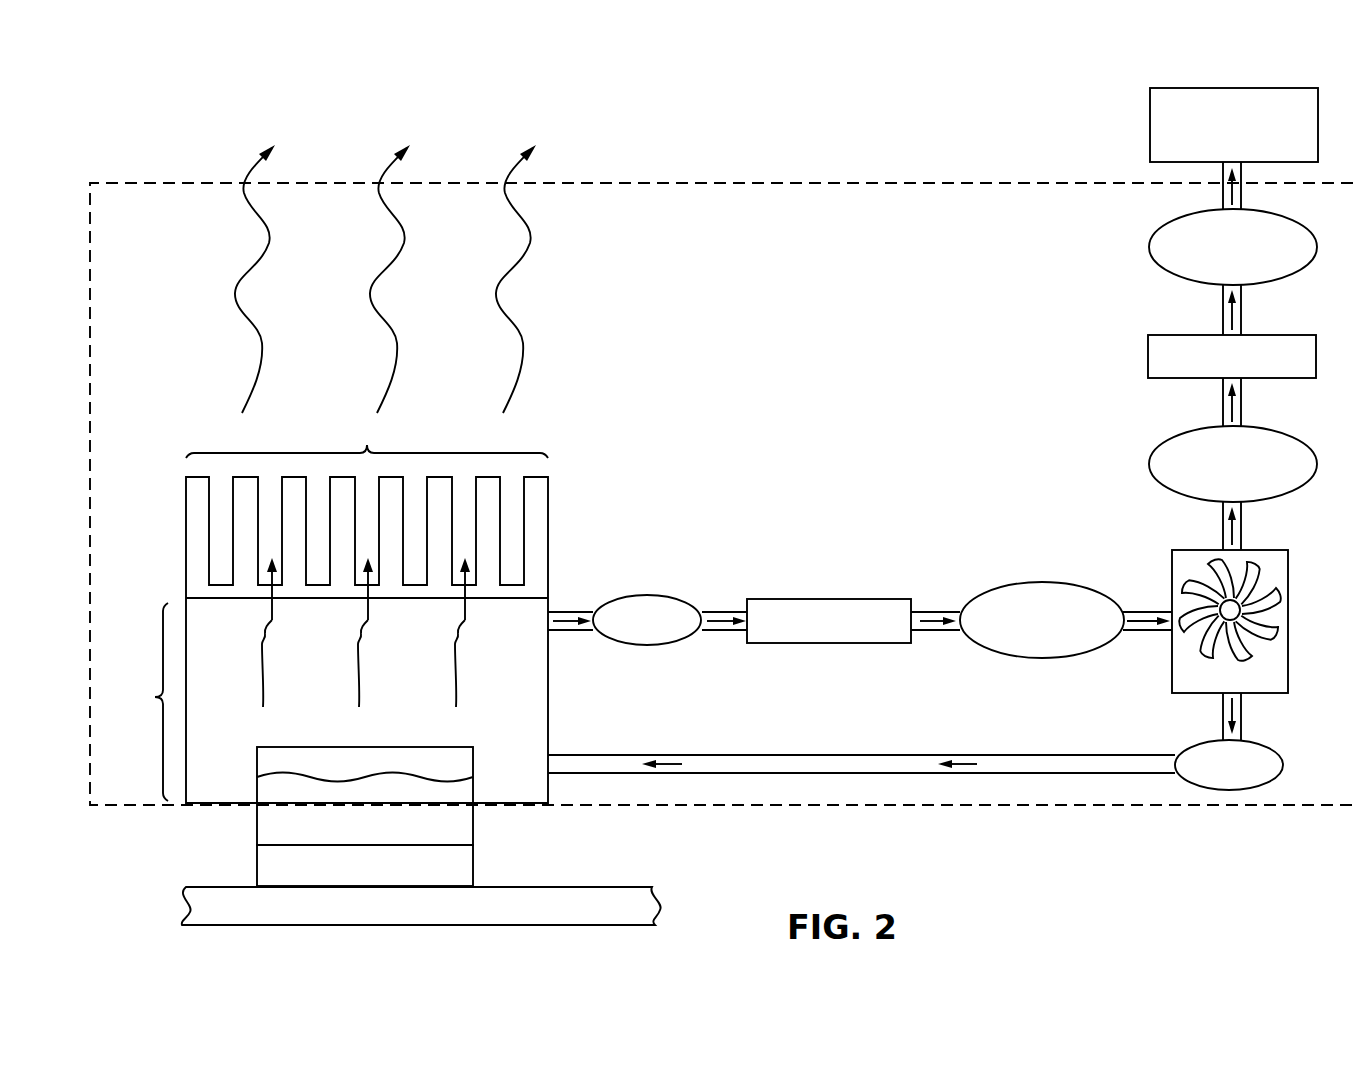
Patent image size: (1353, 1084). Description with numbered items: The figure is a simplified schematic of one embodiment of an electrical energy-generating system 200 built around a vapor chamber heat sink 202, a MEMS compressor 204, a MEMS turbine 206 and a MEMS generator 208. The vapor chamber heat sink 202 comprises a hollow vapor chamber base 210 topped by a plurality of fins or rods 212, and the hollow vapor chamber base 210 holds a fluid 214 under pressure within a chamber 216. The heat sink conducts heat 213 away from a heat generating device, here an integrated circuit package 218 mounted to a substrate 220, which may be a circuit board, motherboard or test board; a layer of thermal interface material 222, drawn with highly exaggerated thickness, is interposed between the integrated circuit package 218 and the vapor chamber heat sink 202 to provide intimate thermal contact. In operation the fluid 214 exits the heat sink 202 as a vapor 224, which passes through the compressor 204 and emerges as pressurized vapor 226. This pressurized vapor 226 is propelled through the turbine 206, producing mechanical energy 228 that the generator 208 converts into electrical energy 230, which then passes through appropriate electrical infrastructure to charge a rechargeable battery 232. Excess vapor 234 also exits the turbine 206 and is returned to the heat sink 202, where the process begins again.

The electrical energy-generating system 200 is at (749, 183).
The vapor chamber heat sink 202 is at (566, 464).
The MEMS compressor 204 is at (870, 599).
The MEMS turbine 206 is at (1268, 550).
The MEMS generator 208 is at (1270, 335).
The hollow vapor chamber base 210 is at (155, 697).
The fins or rods 212 is at (367, 445).
The heat 213 is at (531, 250).
The fluid 214 is at (472, 791).
The chamber 216 is at (475, 763).
The integrated circuit package 218 is at (475, 868).
The substrate 220 is at (590, 887).
The thermal interface material 222 is at (475, 830).
The vapor 224 is at (653, 595).
The pressurized vapor 226 is at (1043, 582).
The mechanical energy 228 is at (1175, 433).
The electrical energy 230 is at (1172, 276).
The rechargeable battery 232 is at (1272, 88).
The excess vapor 234 is at (1265, 750).